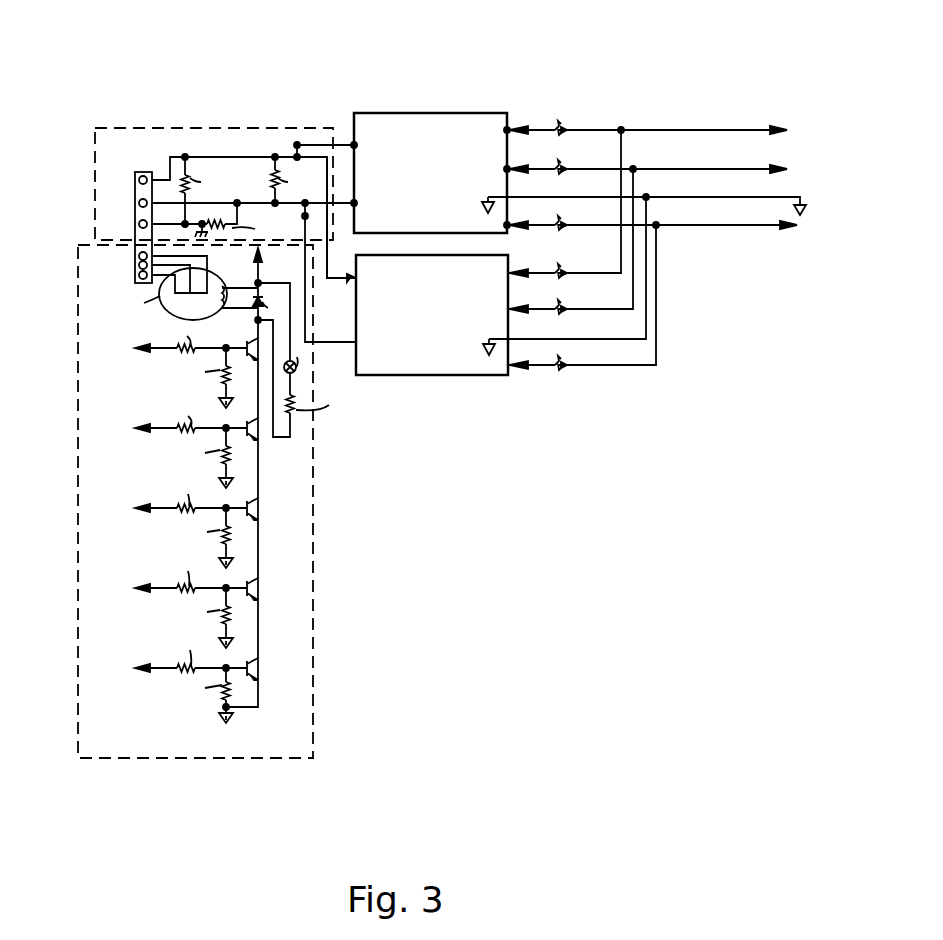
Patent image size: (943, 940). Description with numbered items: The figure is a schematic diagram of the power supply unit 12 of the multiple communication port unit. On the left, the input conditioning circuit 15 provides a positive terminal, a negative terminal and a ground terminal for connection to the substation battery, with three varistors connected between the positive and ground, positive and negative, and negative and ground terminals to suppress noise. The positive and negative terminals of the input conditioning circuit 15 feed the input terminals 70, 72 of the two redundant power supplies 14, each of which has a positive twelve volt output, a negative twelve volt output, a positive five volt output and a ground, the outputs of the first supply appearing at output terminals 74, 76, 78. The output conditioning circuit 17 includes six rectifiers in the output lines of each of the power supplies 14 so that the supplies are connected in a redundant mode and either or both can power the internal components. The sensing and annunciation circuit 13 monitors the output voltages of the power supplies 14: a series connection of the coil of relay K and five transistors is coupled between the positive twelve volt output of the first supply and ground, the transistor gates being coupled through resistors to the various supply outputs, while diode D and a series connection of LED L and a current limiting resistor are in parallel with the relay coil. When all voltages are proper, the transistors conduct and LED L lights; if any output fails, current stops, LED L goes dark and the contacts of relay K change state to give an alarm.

The power supply unit 12 is at (120, 60).
The sensing and annunciation circuit 13 is at (75, 362).
The power supplies 14 is at (380, 407).
The input conditioning circuit 15 is at (190, 128).
The output conditioning circuit 17 is at (593, 108).
The input terminal 70 is at (352, 143).
The input terminal 72 is at (355, 203).
The output terminal 74 is at (508, 168).
The output terminal 76 is at (510, 233).
The output terminal 78 is at (507, 128).